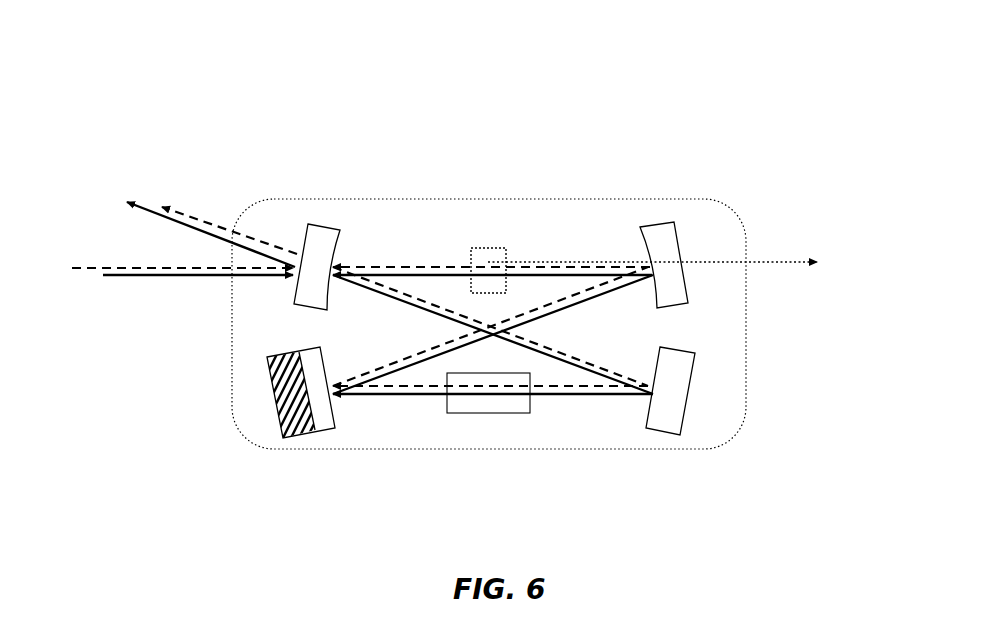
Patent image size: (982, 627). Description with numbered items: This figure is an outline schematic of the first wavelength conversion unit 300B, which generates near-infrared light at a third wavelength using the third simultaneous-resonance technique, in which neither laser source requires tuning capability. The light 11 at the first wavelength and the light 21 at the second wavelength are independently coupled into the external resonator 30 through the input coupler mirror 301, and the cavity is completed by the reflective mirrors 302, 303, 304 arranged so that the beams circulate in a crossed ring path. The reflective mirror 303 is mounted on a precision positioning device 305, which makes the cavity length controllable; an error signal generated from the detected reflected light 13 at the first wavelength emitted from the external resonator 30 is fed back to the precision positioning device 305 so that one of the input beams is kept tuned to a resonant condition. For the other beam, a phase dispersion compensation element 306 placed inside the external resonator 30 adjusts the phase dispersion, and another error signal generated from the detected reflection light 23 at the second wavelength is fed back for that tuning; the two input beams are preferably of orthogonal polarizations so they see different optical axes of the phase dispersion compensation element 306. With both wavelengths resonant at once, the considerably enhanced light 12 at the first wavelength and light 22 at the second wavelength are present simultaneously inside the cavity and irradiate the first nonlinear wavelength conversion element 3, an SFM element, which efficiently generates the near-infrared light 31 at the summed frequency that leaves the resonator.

The first wavelength conversion unit 300B is at (155, 66).
The external resonator 30 is at (573, 195).
The light at the first wavelength 11 is at (73, 263).
The light at the second wavelength 21 is at (142, 284).
The light at the first wavelength inside the resonator 12 is at (373, 258).
The light at the second wavelength inside the resonator 22 is at (427, 398).
The reflected light at the first wavelength 13 is at (197, 215).
The reflection light at the second wavelength 23 is at (140, 204).
The first nonlinear wavelength conversion element 3 is at (488, 245).
The near-infrared light 31 is at (763, 258).
The input coupler mirror 301 is at (316, 220).
The reflective mirror 302 is at (654, 220).
The reflective mirror 303 is at (303, 445).
The reflective mirror 304 is at (665, 440).
The precision positioning device 305 is at (283, 441).
The phase dispersion compensation element 306 is at (505, 415).